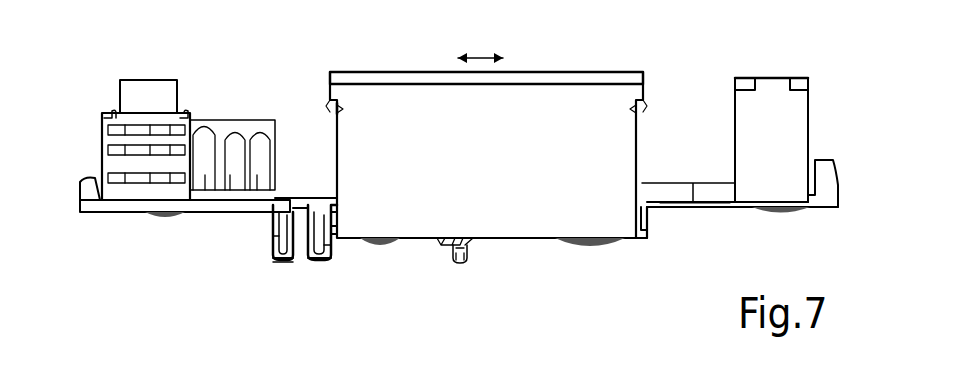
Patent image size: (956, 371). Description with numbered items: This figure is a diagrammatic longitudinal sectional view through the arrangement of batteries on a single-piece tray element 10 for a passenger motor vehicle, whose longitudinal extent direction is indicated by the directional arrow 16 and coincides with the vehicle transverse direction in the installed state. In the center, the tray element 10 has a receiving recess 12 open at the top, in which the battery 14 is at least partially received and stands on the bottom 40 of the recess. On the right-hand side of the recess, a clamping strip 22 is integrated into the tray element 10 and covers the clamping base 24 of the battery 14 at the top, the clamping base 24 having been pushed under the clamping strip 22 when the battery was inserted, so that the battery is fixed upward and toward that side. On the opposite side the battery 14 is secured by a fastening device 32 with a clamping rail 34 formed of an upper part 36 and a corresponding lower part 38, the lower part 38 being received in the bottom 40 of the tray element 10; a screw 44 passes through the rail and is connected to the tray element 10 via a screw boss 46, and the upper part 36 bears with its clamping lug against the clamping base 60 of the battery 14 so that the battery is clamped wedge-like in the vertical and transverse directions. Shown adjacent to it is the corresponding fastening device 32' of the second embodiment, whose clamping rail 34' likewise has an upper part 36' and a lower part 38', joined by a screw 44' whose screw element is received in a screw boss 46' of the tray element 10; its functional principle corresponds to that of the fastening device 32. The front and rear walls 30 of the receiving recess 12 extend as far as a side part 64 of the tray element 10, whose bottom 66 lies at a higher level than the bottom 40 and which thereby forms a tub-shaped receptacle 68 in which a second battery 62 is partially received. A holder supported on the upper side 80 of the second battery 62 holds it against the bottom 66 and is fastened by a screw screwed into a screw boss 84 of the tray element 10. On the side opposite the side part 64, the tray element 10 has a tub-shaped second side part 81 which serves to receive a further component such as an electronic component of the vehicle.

The tray element 10 is at (650, 181).
The receiving recess 12 is at (327, 196).
The battery 14 is at (613, 74).
The directional arrow 16 is at (484, 56).
The clamping strip 22 is at (651, 230).
The clamping base 24 is at (640, 242).
The wall 30 is at (278, 195).
The fastening device 32 is at (345, 199).
The fastening device 32' is at (212, 232).
The clamping rail 34 is at (374, 192).
The clamping rail 34' is at (311, 170).
The upper part 36 is at (379, 215).
The upper part 36' is at (275, 287).
The lower part 38 is at (314, 287).
The lower part 38' is at (234, 258).
The bottom 40 is at (520, 240).
The screw 44 is at (352, 258).
The screw 44' is at (294, 181).
The screw boss 46 is at (336, 281).
The screw boss 46' is at (242, 286).
The clamping base 60 is at (338, 235).
The second battery 62 is at (810, 108).
The side part 64 is at (723, 217).
The bottom 66 is at (697, 195).
The receptacle 68 is at (737, 183).
The upper side 80 is at (777, 76).
The second side part 81 is at (142, 213).
The screw boss 84 is at (826, 195).